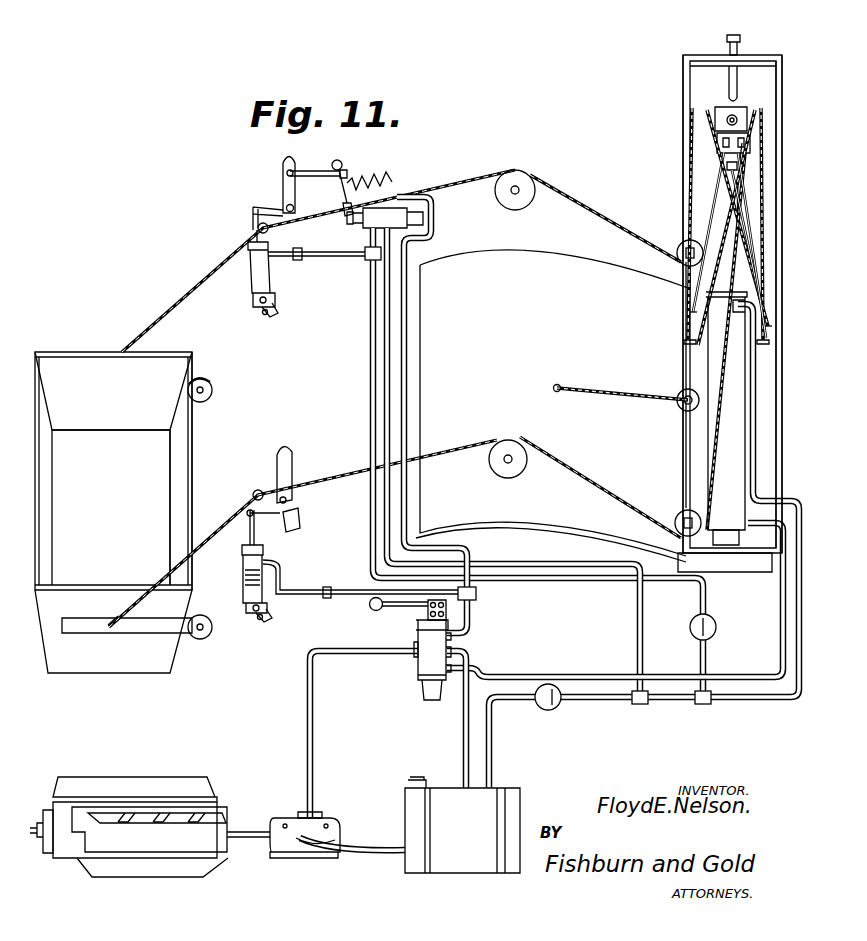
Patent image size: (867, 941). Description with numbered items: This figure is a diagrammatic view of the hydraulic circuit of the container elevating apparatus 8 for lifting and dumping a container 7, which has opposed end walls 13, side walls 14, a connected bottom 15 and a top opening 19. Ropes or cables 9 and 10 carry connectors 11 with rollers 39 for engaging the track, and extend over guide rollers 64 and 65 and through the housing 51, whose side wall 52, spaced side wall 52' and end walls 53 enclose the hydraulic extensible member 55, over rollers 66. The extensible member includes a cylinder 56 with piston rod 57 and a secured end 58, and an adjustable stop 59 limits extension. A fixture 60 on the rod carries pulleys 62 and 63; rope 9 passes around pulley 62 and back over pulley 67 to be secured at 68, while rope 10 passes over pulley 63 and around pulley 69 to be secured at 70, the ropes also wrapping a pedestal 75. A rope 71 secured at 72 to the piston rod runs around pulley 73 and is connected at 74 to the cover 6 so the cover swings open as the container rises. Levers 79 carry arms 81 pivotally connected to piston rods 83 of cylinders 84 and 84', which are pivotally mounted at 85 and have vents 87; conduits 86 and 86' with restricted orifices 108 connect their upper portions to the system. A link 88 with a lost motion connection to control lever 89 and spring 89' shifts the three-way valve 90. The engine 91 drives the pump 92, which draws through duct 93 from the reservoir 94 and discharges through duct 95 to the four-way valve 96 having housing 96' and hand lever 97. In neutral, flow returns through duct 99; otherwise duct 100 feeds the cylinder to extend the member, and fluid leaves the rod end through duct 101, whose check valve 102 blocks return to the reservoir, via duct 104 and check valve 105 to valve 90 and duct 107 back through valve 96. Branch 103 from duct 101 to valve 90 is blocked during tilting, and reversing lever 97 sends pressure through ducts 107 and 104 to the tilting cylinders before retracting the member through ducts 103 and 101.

The door or cover 6 is at (528, 258).
The container 7 is at (35, 352).
The container elevating apparatus 8 is at (690, 56).
The rope or cable 9 is at (186, 292).
The rope or cable 10 is at (210, 525).
The connector 11 is at (108, 622).
The end wall 13 is at (68, 664).
The side wall 14 is at (192, 452).
The bottom 15 is at (107, 442).
The top opening 19 is at (94, 352).
The roller 39 is at (203, 640).
The housing 51 is at (776, 575).
The side wall 52 is at (664, 304).
The side wall 52' is at (799, 304).
The end wall 53 is at (700, 570).
The hydraulic extensible member 55 is at (734, 436).
The cylinder 56 is at (712, 420).
The piston rod 57 is at (728, 257).
The end of cylinder 58 is at (725, 545).
The adjustable stop 59 is at (737, 72).
The fixture 60 is at (718, 107).
The pulley 62 is at (692, 115).
The pulley 63 is at (764, 130).
The guide roller 64 is at (258, 490).
The guide roller 65 is at (510, 440).
The roller 66 is at (680, 247).
The pulley 67 is at (692, 318).
The rope end securement 68 is at (720, 143).
The pulley 69 is at (766, 325).
The rope end securement 70 is at (742, 140).
The rope 71 is at (723, 227).
The rope end securement 72 is at (737, 165).
The pulley 73 is at (680, 396).
The rope connection 74 is at (562, 387).
The pedestal 75 is at (726, 121).
The lever 79 is at (283, 186).
The arm 81 is at (268, 515).
The piston rod 83 is at (248, 535).
The cylinder 84 is at (243, 583).
The cylinder 84' is at (250, 269).
The pivot mounting 85 is at (268, 318).
The conduit 86 is at (361, 565).
The conduit 86' is at (317, 276).
The vent 87 is at (258, 305).
The link 88 is at (305, 168).
The control lever 89 is at (357, 181).
The spring 89' is at (379, 172).
The three-way single-acting open center valve 90 is at (392, 210).
The engine 91 is at (215, 778).
The pump 92 is at (272, 818).
The duct 93 is at (358, 846).
The reservoir 94 is at (446, 866).
The duct 95 is at (314, 728).
The four-way double-acting open center valve 96 is at (420, 660).
The housing 96' is at (420, 621).
The hand lever 97 is at (372, 611).
The duct 99 is at (462, 735).
The duct 100 is at (485, 668).
The duct 101 is at (493, 755).
The check valve 102 is at (560, 708).
The branch 103 is at (388, 343).
The duct 104 is at (371, 357).
The check valve 105 is at (716, 627).
The duct 107 is at (406, 372).
The restricted orifice 108 is at (302, 252).